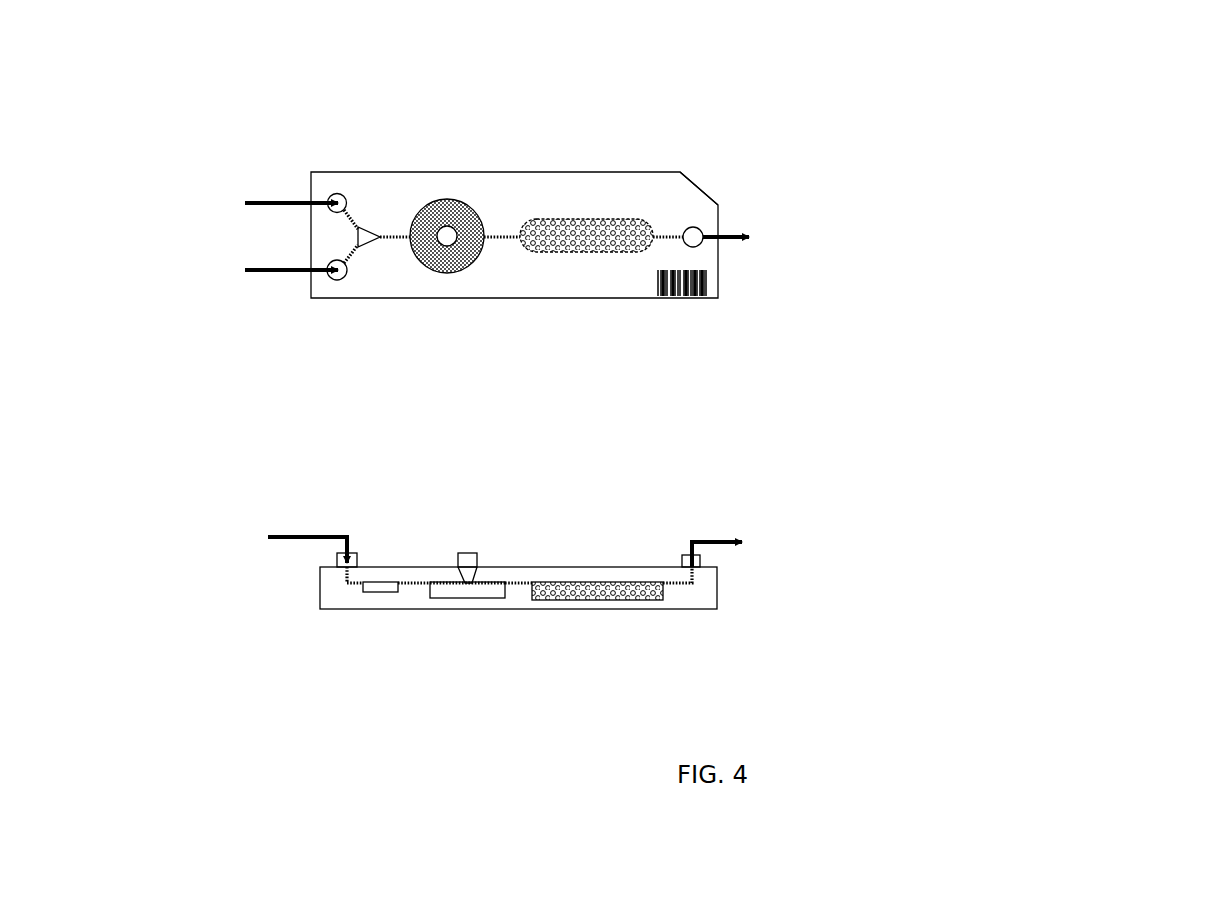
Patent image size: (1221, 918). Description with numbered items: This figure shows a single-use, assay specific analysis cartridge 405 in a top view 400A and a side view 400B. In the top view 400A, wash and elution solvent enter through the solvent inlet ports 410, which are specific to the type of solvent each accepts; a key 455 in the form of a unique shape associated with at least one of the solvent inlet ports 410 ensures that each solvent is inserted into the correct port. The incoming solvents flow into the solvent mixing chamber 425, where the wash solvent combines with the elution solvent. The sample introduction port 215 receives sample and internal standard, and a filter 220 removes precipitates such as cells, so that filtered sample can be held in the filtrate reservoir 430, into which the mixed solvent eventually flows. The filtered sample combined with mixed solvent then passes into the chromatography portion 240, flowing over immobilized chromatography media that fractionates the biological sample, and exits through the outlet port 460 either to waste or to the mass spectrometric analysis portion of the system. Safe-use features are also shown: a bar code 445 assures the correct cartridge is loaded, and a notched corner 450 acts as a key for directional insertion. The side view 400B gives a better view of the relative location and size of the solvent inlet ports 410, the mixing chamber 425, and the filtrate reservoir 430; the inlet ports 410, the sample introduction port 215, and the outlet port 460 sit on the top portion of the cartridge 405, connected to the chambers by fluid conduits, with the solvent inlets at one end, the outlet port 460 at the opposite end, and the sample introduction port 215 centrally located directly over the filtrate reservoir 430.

The top view 400A is at (188, 56).
The side view 400B is at (195, 472).
The single-use cartridge 405 is at (632, 278).
The solvent inlet ports 410 is at (340, 260).
The sample introduction port 215 is at (455, 221).
The filter 220 is at (447, 273).
The chromatography portion 240 is at (590, 252).
The solvent mixing chamber 425 is at (367, 243).
The filtrate reservoir 430 is at (460, 610).
The bar code 445 is at (708, 283).
The notched corner 450 is at (700, 190).
The key 455 is at (342, 278).
The outlet port 460 is at (830, 397).